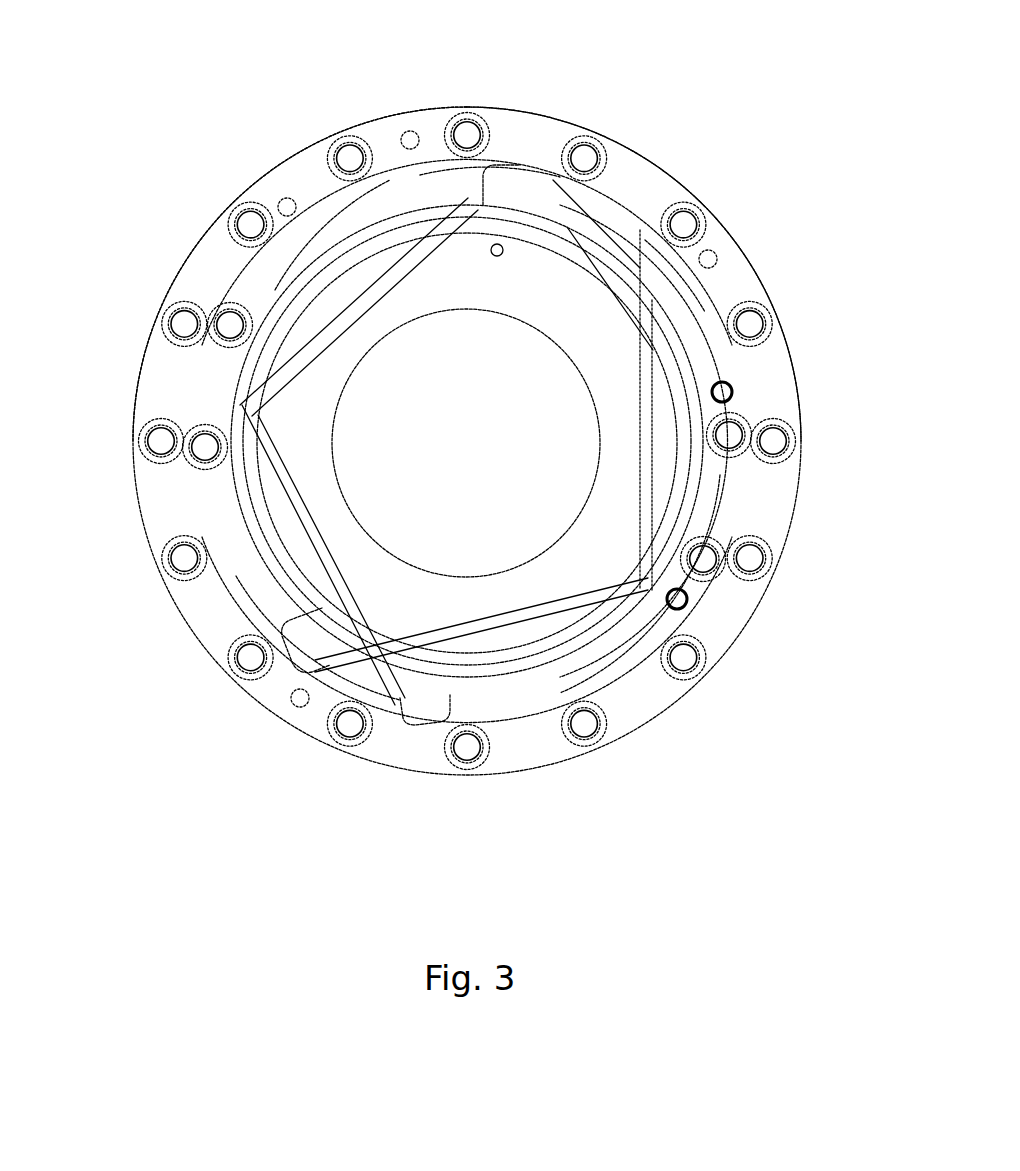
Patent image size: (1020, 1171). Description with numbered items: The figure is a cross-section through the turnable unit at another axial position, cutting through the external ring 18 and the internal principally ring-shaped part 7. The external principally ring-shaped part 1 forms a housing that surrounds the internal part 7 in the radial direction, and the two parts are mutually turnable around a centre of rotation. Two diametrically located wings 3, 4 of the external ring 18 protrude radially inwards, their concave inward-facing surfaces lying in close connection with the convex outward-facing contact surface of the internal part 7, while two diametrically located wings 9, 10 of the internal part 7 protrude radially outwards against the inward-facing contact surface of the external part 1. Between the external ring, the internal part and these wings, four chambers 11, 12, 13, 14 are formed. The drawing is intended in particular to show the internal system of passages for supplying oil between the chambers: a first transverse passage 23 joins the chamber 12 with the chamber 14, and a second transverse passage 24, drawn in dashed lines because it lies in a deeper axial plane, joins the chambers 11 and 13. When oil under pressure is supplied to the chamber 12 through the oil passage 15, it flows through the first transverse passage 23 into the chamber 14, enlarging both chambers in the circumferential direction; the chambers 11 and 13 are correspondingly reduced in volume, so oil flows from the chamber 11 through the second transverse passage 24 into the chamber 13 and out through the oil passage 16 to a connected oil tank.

The external principally ring-shaped part 1 is at (640, 170).
The external ring 18 is at (300, 274).
The wing 3 is at (223, 383).
The wing 4 is at (712, 496).
The internal principally ring-shaped part 7 is at (628, 378).
The wing 9 is at (342, 685).
The wing 10 is at (541, 192).
The chamber 11 is at (350, 200).
The chamber 12 is at (687, 288).
The chamber 13 is at (607, 667).
The chamber 14 is at (233, 580).
The oil passage 15 is at (737, 390).
The oil passage 16 is at (688, 603).
The first transverse passage 23 is at (497, 618).
The second transverse passage 24 is at (365, 295).